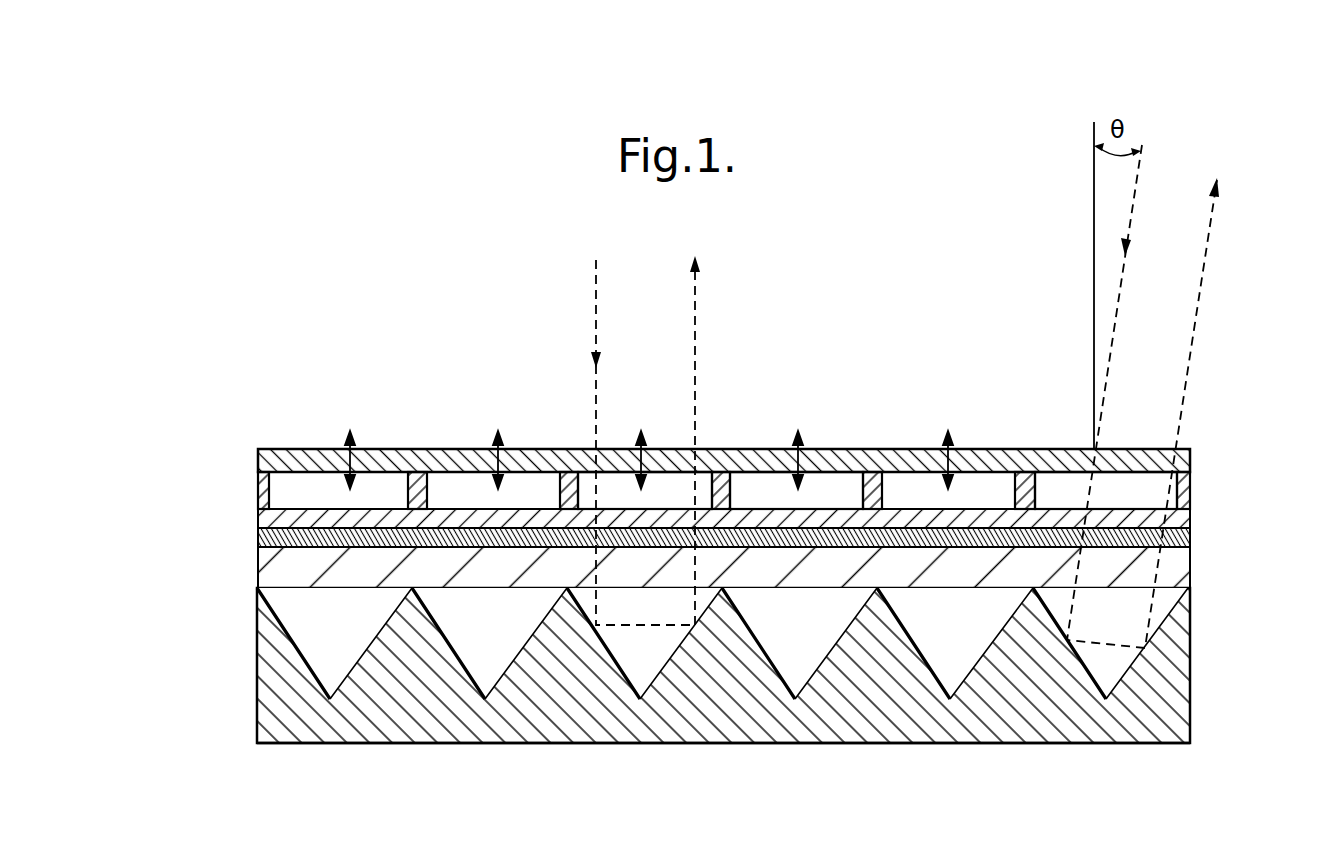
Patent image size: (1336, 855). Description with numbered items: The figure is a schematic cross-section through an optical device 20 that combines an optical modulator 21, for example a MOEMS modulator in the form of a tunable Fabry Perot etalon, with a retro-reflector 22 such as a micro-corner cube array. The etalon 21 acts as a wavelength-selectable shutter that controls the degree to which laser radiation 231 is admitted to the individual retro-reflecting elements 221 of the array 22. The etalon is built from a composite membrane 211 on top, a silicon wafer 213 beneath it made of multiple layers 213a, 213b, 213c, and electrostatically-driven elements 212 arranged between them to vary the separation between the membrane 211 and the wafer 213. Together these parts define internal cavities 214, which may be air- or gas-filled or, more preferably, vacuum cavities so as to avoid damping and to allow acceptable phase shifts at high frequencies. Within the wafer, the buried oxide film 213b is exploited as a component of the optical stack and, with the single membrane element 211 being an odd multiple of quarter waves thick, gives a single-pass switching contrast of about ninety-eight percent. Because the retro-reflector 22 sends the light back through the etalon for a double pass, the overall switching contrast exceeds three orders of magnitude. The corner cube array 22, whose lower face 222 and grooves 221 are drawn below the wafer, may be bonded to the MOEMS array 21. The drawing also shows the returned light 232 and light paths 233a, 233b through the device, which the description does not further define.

The optical device 20 is at (408, 291).
The optical modulator 21 is at (138, 450).
The composite membrane 211 is at (532, 448).
The electrostatically-driven elements 212 is at (418, 448).
The silicon wafer 213 is at (237, 508).
The wafer layer 213a is at (1192, 518).
The buried oxide film 213b is at (1192, 540).
The wafer layer 213c is at (1192, 573).
The internal cavities 214 is at (833, 490).
The retro-reflector 22 is at (138, 603).
The retro-reflecting elements 221 is at (470, 680).
The bottom surface 222 is at (605, 745).
The laser radiation 231 is at (596, 268).
The emitted light 232 is at (695, 325).
The first light path 233a is at (604, 488).
The second light path 233b is at (1082, 486).